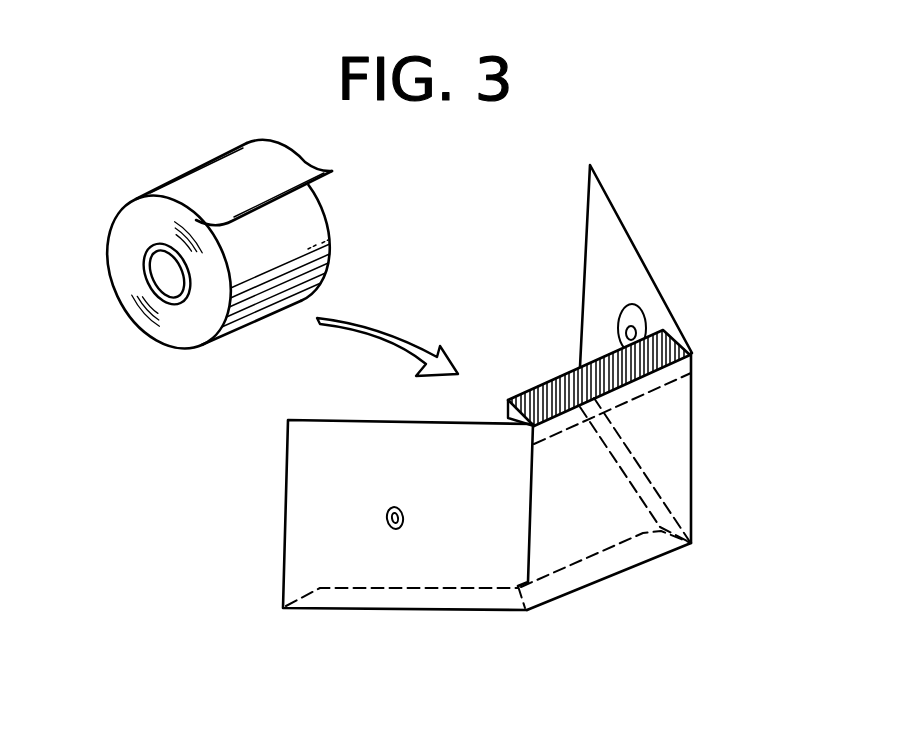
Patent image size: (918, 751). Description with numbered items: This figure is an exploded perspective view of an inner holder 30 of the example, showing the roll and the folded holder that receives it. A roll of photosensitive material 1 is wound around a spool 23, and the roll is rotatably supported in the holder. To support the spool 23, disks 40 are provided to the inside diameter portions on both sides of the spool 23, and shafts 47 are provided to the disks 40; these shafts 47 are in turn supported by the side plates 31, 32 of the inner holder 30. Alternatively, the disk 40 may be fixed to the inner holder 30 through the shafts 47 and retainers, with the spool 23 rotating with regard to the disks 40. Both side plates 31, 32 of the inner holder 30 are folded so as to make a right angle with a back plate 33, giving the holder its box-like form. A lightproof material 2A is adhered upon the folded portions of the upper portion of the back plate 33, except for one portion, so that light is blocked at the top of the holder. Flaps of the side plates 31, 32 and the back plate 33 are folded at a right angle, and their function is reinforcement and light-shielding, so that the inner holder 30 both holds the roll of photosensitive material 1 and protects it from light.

The photosensitive material 1 is at (312, 225).
The spool 23 is at (177, 312).
The side plate 31 is at (612, 233).
The disk 40 is at (610, 322).
The lightproof material 2A is at (663, 335).
The side plate 32 is at (297, 485).
The shaft 47 is at (392, 530).
The back plate 33 is at (678, 483).
The inner holder 30 is at (627, 594).